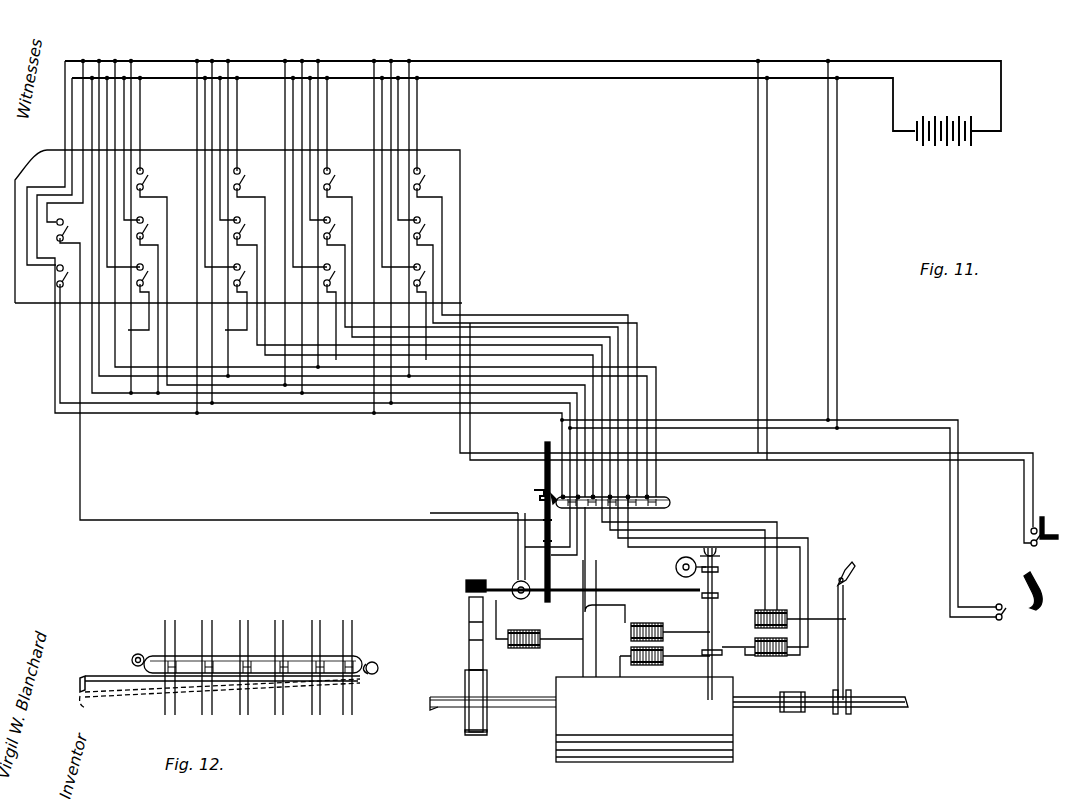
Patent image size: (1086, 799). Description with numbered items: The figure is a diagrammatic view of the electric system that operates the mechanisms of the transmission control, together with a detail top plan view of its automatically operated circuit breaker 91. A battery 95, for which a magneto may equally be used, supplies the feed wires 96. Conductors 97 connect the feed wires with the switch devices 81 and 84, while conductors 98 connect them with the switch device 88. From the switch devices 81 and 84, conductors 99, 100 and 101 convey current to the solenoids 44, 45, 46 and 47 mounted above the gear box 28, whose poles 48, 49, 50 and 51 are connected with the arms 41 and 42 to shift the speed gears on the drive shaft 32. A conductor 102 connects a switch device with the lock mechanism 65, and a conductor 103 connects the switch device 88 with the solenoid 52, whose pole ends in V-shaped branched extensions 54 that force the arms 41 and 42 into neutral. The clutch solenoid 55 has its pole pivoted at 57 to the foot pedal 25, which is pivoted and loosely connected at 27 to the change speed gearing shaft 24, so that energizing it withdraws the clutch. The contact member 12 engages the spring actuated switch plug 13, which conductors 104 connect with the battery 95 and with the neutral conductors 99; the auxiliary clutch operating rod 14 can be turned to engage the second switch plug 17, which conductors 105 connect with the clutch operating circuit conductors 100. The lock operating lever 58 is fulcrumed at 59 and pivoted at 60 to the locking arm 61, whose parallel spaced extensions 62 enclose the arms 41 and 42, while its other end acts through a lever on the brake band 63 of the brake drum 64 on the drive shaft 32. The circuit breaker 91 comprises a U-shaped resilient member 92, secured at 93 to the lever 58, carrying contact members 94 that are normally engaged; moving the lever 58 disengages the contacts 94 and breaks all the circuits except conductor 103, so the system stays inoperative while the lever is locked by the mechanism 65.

In FIG. 11, the contact member 12 is at (1035, 590).
In FIG. 11, the spring actuated switch plug 13 is at (1003, 616).
In FIG. 11, the auxiliary clutch operating rod 14 is at (1052, 524).
In FIG. 11, the second spring actuated switch plug 17 is at (1040, 545).
In FIG. 11, the change speed gearing shaft 24 is at (890, 694).
In FIG. 11, the foot pedal 25 is at (852, 574).
In FIG. 11, the loose connection 27 is at (848, 690).
In FIG. 11, the gear box 28 is at (730, 720).
In FIG. 11, the drive shaft 32 is at (530, 708).
In FIG. 11, the arm 41 is at (602, 615).
In FIG. 11, the arm 42 is at (716, 578).
In FIG. 11, the solenoid 44 is at (716, 608).
In FIG. 11, the solenoid 45 is at (650, 648).
In FIG. 11, the solenoid 46 is at (774, 648).
In FIG. 11, the solenoid 47 is at (526, 649).
In FIG. 11, the pole 48 is at (610, 618).
In FIG. 11, the pole 49 is at (672, 668).
In FIG. 11, the pole 50 is at (740, 650).
In FIG. 11, the pole 51 is at (560, 642).
In FIG. 11, the solenoid 52 is at (690, 555).
In FIG. 11, the branched extensions 54 is at (718, 545).
In FIG. 11, the solenoid 55 is at (785, 608).
In FIG. 11, the pivot 57 is at (848, 612).
In FIG. 11, the lock operating lever 58 is at (545, 518).
In FIG. 11, the fulcrum 59 is at (536, 495).
In FIG. 11, the pivot 60 is at (533, 592).
In FIG. 11, the locking arm 61 is at (484, 588).
In FIG. 11, the parallel spaced extensions 62 is at (705, 545).
In FIG. 11, the brake band 63 is at (472, 690).
In FIG. 11, the brake drum 64 is at (476, 732).
In FIG. 11, the lock mechanism 65 is at (512, 592).
In FIG. 11, the switch device 81 is at (476, 264).
In FIG. 11, the switch device 84 is at (468, 222).
In FIG. 11, the switch device 88 is at (66, 225).
In FIG. 11, the circuit breaker 91 is at (640, 490).
In FIG. 11, the U-shaped resilient member 92 is at (624, 492).
In FIG. 12, the U-shaped resilient member 92 is at (368, 656).
In FIG. 11, the securing point 93 is at (556, 490).
In FIG. 12, the securing point 93 is at (132, 658).
In FIG. 12, the contact members 94 is at (180, 662).
In FIG. 11, the battery 95 is at (944, 141).
In FIG. 11, the feed wires 96 is at (704, 82).
In FIG. 11, the conductors 97 is at (430, 121).
In FIG. 11, the conductors 98 is at (92, 100).
In FIG. 11, the conductors 99 is at (478, 306).
In FIG. 11, the conductors 100 is at (425, 319).
In FIG. 11, the conductors 101 is at (480, 244).
In FIG. 11, the conductor 102 is at (60, 350).
In FIG. 11, the conductor 103 is at (78, 392).
In FIG. 11, the conductors 104 is at (955, 510).
In FIG. 11, the conductors 105 is at (901, 455).